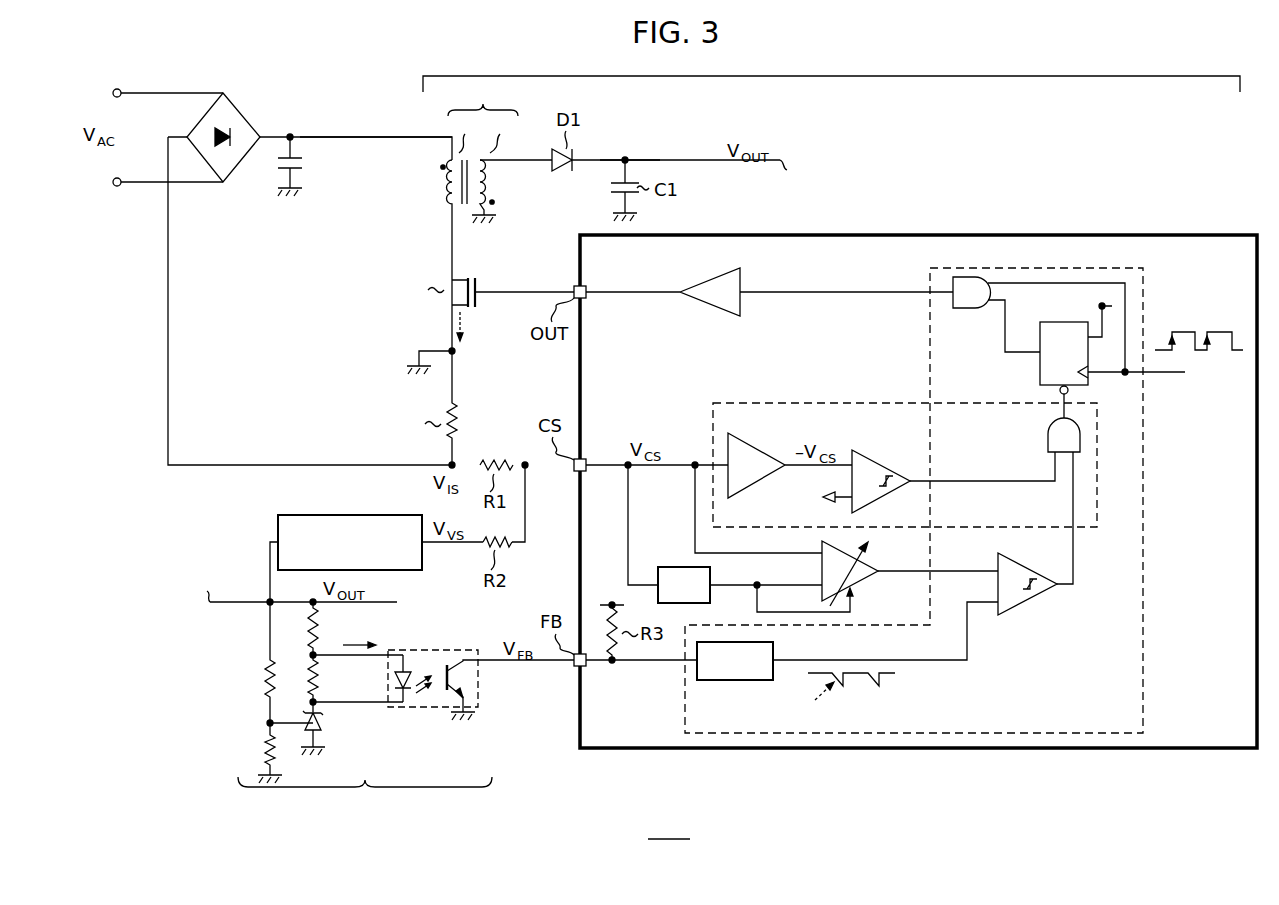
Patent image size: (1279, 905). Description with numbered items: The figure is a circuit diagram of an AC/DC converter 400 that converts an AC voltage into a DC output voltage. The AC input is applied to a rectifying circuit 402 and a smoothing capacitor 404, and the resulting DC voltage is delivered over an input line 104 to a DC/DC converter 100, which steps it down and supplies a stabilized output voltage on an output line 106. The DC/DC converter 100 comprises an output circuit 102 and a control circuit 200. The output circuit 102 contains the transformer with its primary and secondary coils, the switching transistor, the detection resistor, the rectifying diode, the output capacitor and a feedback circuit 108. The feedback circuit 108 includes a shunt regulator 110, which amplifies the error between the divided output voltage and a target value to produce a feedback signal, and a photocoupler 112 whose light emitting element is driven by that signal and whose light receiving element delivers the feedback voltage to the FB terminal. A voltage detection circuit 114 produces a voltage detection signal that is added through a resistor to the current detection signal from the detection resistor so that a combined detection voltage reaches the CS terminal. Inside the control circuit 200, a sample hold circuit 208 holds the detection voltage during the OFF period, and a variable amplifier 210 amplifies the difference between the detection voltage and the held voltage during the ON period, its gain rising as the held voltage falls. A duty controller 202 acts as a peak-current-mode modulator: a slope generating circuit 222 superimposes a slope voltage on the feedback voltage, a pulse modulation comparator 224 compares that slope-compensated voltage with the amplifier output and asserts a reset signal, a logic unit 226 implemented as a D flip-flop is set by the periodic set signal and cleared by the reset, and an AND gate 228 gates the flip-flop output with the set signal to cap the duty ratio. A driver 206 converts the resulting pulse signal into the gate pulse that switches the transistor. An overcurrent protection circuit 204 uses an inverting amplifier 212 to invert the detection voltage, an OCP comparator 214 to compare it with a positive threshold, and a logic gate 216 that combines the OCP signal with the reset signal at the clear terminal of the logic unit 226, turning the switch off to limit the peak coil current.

The DC/DC converter 100 is at (831, 72).
The output circuit 102 is at (429, 210).
The input line 104 is at (401, 140).
The output line 106 is at (645, 156).
The feedback circuit 108 is at (365, 708).
The shunt regulator 110 is at (326, 723).
The photocoupler 112 is at (431, 650).
The voltage detection circuit 114 is at (349, 514).
The control circuit 200 is at (966, 234).
The duty controller 202 is at (1076, 266).
The overcurrent protection circuit 204 is at (838, 400).
The driver 206 is at (712, 320).
The sample hold circuit 208 is at (668, 564).
The variable amplifier 210 is at (878, 581).
The inverting amplifier 212 is at (768, 446).
The OCP comparator 214 is at (882, 460).
The logic gate 216 is at (1044, 441).
The slope generating circuit 222 is at (726, 683).
The pulse modulation comparator 224 is at (1024, 606).
The logic unit 226 is at (1054, 324).
The AND gate 228 is at (976, 312).
The AC/DC converter 400 is at (669, 828).
The rectifying circuit 402 is at (258, 101).
The smoothing capacitor 404 is at (270, 162).